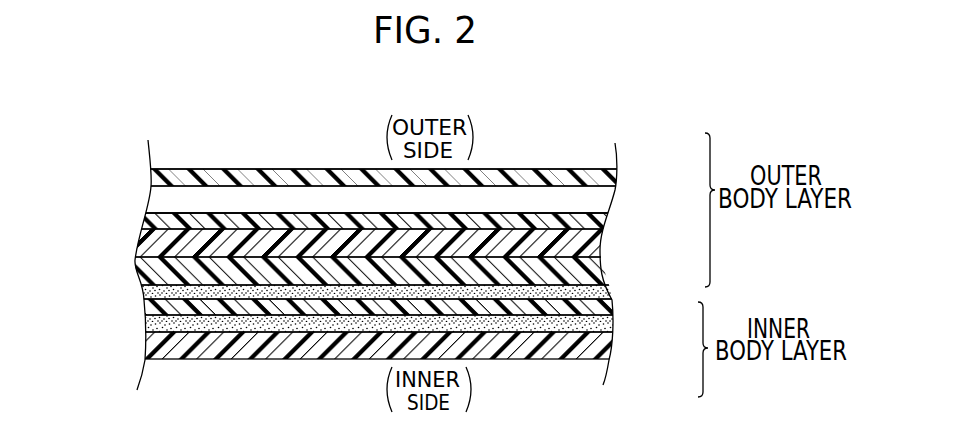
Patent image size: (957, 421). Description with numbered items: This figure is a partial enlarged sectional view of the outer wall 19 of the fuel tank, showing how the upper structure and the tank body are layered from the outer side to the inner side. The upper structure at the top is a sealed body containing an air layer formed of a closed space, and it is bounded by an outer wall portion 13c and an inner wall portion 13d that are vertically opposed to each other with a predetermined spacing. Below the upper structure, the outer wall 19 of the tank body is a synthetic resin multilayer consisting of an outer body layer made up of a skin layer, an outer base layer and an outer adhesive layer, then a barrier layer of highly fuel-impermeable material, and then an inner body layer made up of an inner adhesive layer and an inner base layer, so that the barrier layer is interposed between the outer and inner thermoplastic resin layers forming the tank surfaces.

The outer wall 19 is at (278, 133).
The outer wall portion 13c is at (199, 173).
The inner wall portion 13d is at (352, 213).